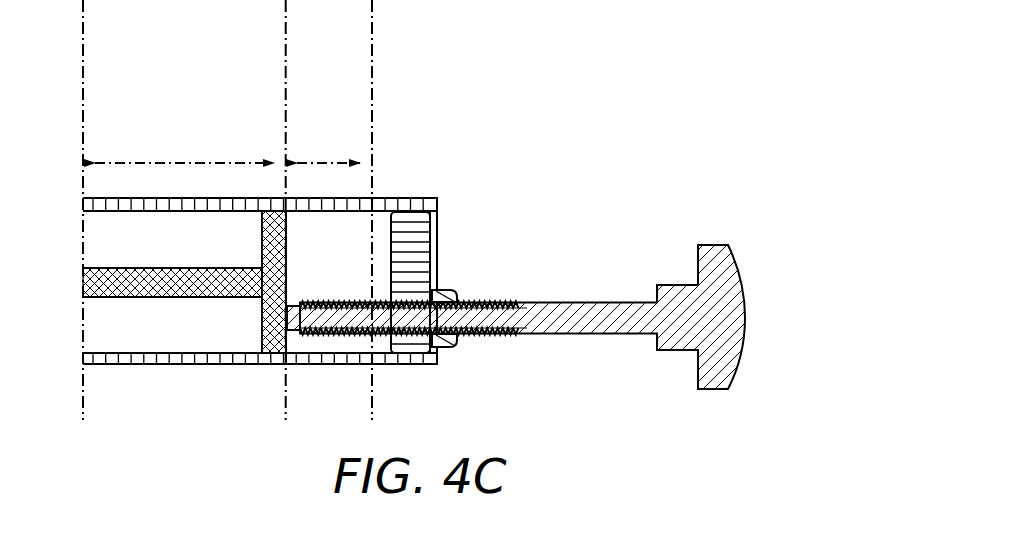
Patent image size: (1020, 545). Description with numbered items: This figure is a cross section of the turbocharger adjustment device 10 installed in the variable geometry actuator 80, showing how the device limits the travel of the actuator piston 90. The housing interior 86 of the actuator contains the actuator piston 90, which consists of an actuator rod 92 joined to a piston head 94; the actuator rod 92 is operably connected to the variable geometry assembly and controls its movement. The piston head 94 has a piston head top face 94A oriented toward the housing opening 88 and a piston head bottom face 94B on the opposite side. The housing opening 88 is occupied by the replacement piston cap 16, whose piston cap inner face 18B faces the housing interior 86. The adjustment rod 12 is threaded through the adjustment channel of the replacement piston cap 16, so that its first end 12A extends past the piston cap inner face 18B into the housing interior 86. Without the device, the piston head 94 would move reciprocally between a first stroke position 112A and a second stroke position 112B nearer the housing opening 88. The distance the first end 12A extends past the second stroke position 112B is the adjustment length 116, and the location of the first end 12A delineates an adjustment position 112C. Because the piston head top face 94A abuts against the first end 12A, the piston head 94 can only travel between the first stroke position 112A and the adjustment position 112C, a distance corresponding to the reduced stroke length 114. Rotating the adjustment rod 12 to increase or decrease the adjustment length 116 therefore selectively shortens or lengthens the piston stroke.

The turbocharger adjustment device 10 is at (634, 205).
The adjustment rod 12 is at (573, 302).
The first end 12A is at (287, 305).
The replacement piston cap 16 is at (431, 244).
The piston cap inner face 18B is at (392, 238).
The variable geometry actuator 80 is at (347, 372).
The housing interior 86 is at (148, 356).
The housing opening 88 is at (437, 198).
The actuator piston 90 is at (263, 356).
The actuator rod 92 is at (103, 297).
The piston head 94 is at (262, 318).
The piston head top face 94A is at (288, 250).
The piston head bottom face 94B is at (262, 243).
The first stroke position 112A is at (83, 116).
The second stroke position 112B is at (372, 116).
The adjustment position 112C is at (286, 160).
The reduced stroke length 114 is at (185, 162).
The adjustment length 116 is at (328, 162).